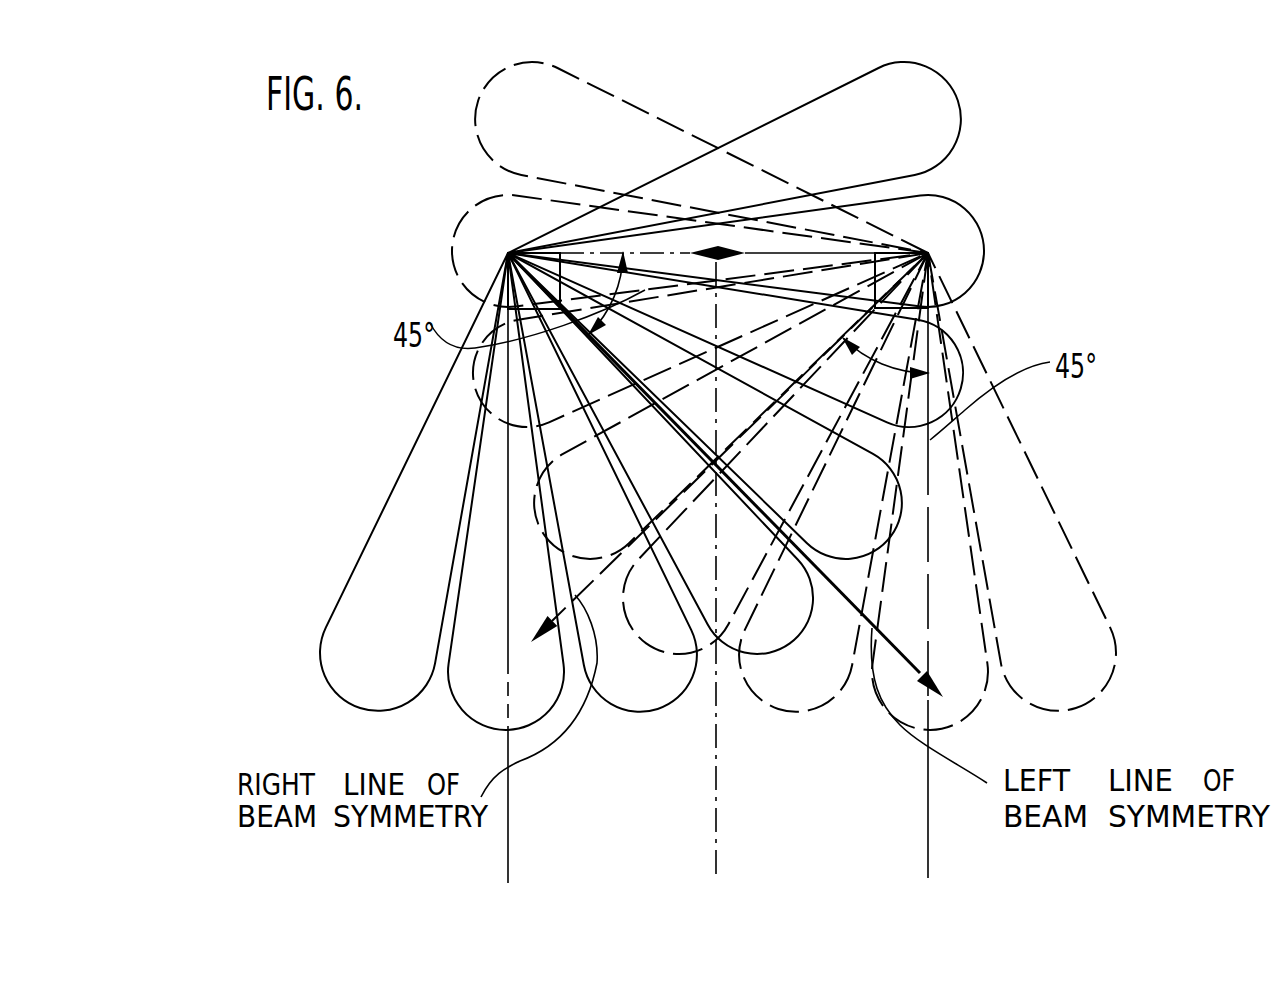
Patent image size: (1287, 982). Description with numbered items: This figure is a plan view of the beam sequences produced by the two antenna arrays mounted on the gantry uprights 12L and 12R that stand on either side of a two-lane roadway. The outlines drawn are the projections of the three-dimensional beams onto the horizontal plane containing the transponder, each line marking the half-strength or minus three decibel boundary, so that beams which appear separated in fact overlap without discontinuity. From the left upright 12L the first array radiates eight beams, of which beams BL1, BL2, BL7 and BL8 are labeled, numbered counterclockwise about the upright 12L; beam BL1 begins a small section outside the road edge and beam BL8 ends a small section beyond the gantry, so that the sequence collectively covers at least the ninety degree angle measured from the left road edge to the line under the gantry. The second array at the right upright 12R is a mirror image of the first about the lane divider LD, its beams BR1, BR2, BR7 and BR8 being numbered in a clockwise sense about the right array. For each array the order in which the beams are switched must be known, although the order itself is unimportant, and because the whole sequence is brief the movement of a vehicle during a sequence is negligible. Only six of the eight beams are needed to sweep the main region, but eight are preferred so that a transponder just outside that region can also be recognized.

The gantry upright 12L is at (503, 250).
The gantry upright 12R is at (934, 243).
The beam BL1 is at (358, 548).
The beam BL2 is at (447, 610).
The beam BL7 is at (977, 223).
The beam BL8 is at (942, 80).
The beam BR1 is at (1072, 530).
The beam BR2 is at (987, 642).
The beam BR7 is at (452, 259).
The beam BR8 is at (597, 87).
The lane divider LD is at (716, 856).